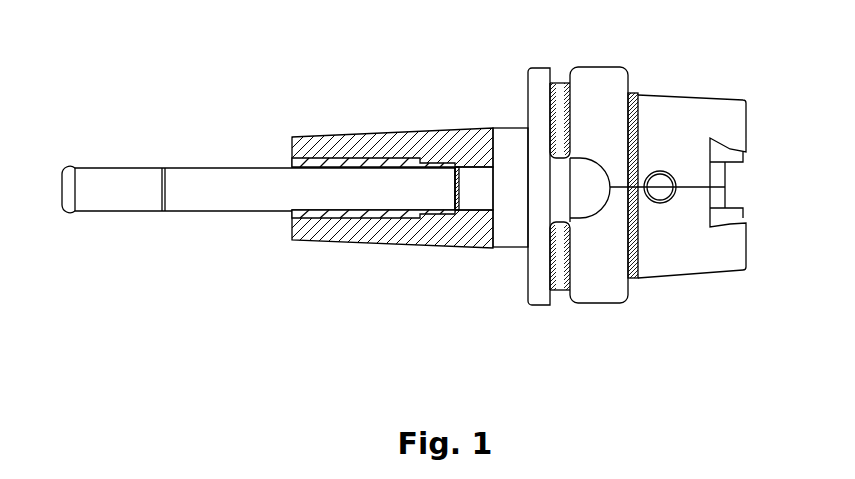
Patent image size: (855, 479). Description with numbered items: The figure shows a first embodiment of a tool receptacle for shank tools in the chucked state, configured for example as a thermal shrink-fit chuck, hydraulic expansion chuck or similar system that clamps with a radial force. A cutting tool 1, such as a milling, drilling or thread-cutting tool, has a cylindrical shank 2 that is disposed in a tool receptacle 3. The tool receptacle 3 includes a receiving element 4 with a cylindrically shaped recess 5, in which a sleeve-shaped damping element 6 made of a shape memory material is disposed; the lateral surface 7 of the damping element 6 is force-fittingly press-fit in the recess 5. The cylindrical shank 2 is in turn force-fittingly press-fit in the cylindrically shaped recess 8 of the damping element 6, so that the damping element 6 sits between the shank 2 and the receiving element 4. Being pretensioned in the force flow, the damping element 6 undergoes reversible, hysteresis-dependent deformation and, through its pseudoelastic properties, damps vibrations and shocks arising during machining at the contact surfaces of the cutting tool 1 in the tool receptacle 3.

The cutting tool 1 is at (122, 192).
The cylindrical shank 2 is at (312, 190).
The tool receptacle 3 is at (610, 80).
The receiving element 4 is at (376, 145).
The cylindrically shaped recess 5 is at (415, 162).
The sleeve-shaped damping element 6 is at (308, 240).
The lateral surface 7 is at (368, 214).
The cylindrically shaped recess 8 is at (400, 224).